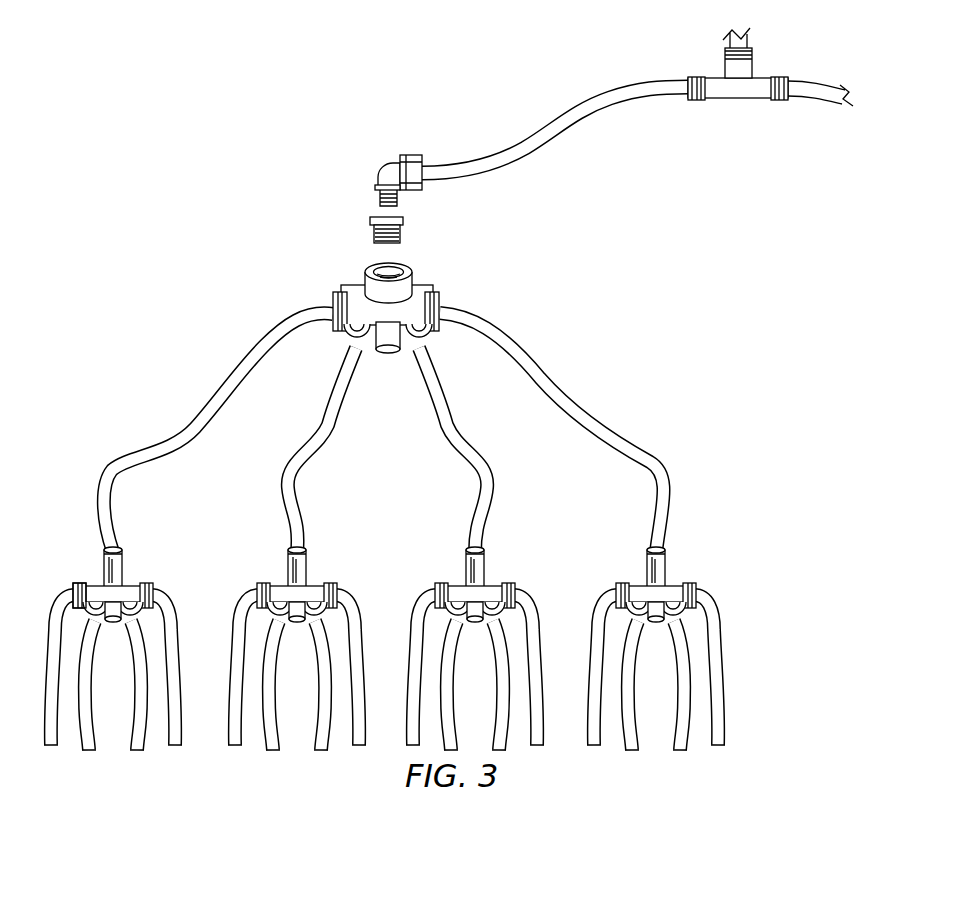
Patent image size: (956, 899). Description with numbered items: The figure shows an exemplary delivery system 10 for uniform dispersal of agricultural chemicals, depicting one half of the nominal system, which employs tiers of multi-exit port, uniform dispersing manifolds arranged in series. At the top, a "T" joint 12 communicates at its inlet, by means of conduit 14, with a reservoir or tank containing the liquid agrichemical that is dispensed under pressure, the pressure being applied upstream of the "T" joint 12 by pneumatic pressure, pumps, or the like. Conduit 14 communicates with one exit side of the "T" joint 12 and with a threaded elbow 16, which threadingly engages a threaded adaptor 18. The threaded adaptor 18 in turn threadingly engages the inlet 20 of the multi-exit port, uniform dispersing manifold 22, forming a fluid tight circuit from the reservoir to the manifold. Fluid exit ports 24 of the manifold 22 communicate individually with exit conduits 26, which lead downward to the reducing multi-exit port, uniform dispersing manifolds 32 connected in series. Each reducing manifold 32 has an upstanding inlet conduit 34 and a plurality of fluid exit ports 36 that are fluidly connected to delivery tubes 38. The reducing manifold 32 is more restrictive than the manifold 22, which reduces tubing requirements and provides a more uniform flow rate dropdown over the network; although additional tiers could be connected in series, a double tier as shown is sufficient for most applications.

The delivery system 10 is at (300, 111).
The "T" joint 12 is at (764, 94).
The conduit 14 is at (730, 42).
The threaded elbow 16 is at (388, 162).
The threaded adaptor 18 is at (370, 215).
The inlet 20 is at (364, 280).
The multi-exit port, uniform dispersing manifold 22 is at (420, 275).
The fluid exit ports 24 is at (441, 302).
The exit conduits 26 is at (182, 432).
The reducing multi-exit port, uniform dispersing manifold 32 is at (485, 587).
The upstanding inlet conduit 34 is at (123, 572).
The fluid exit ports 36 is at (77, 588).
The delivery tubes 38 is at (148, 675).